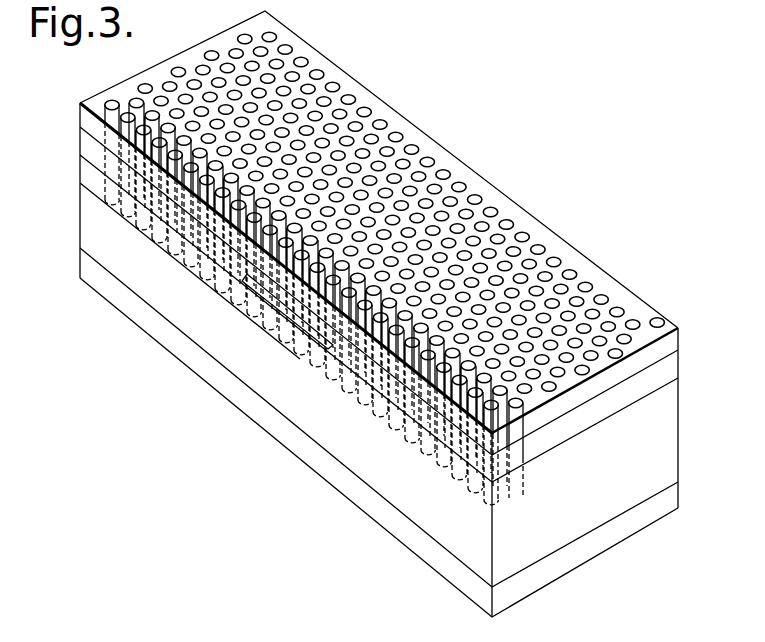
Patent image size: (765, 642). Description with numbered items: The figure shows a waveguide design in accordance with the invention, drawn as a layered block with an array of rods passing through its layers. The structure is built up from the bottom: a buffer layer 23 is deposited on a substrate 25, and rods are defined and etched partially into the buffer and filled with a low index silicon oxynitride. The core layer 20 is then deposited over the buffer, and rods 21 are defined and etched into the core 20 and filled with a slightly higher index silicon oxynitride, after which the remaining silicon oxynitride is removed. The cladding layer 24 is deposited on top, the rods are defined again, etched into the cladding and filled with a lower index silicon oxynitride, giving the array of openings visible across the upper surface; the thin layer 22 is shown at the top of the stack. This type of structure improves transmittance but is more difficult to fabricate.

The core layer 20 is at (668, 372).
The rods 21 is at (100, 207).
The top layer 22 is at (668, 345).
The buffer layer 23 is at (665, 441).
The cladding layer 24 is at (334, 84).
The substrate 25 is at (663, 503).